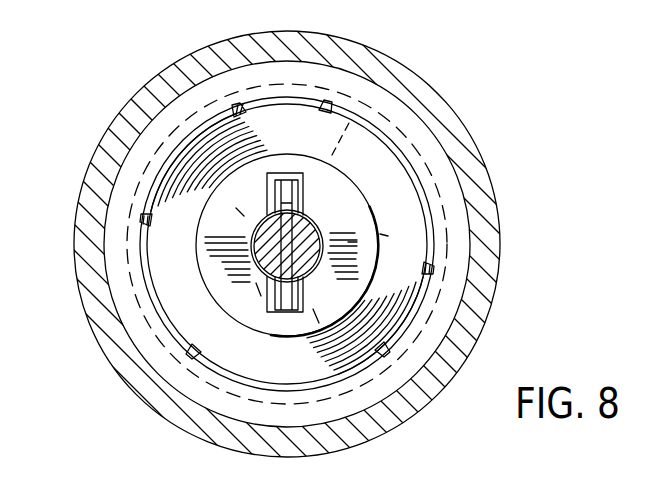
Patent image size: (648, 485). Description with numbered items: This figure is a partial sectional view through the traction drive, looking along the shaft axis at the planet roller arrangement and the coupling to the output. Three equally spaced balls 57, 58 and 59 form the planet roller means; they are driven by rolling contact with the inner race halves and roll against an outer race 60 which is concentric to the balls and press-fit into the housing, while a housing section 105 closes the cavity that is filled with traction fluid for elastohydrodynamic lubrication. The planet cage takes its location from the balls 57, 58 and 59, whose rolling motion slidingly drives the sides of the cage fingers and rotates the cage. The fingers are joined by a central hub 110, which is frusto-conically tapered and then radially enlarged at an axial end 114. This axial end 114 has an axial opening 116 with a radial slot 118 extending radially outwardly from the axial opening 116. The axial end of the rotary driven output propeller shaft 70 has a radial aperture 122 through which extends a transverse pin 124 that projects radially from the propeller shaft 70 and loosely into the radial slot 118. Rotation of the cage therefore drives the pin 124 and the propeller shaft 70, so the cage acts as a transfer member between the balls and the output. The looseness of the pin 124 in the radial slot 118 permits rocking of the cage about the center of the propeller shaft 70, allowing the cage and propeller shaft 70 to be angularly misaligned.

The roller ball 57 is at (230, 108).
The roller ball 58 is at (150, 268).
The roller ball 59 is at (430, 271).
The outer race 60 is at (407, 117).
The propeller shaft 70 is at (300, 255).
The housing section 105 is at (380, 53).
The central hub 110 is at (177, 303).
The axial end 114 is at (275, 330).
The axial opening 116 is at (321, 228).
The radial slot 118 is at (303, 197).
The radial aperture 122 is at (273, 233).
The transverse pin 124 is at (283, 187).